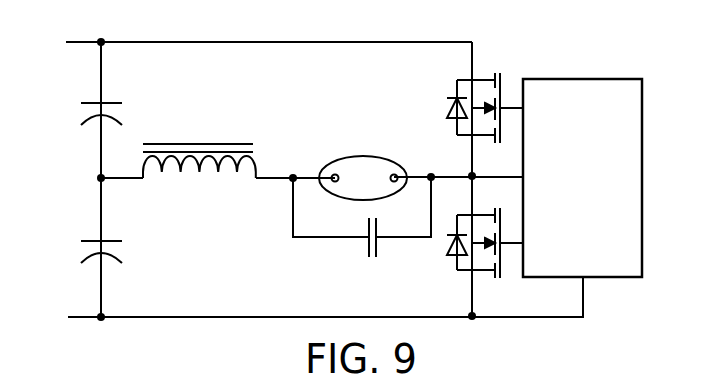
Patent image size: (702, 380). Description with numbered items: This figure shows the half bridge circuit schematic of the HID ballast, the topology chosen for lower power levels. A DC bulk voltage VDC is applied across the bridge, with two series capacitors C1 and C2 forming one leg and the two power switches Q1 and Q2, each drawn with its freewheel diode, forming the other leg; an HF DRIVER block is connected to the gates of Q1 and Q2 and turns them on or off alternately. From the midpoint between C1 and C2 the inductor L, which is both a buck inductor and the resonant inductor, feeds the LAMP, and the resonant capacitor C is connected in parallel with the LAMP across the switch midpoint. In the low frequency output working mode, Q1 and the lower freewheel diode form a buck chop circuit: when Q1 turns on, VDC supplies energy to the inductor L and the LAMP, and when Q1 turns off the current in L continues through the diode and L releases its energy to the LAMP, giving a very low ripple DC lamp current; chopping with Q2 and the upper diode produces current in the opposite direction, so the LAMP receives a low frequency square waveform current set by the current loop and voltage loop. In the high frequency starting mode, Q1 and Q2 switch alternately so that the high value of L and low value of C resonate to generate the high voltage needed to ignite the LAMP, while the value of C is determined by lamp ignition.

The DC bulk voltage source VDC is at (269, 30).
The half bridge capacitor C1 is at (82, 112).
The half bridge capacitor C2 is at (82, 251).
The inductor L is at (199, 178).
The lamp LAMP is at (363, 165).
The resonant capacitor C is at (362, 235).
The power switch Q1 is at (468, 108).
The power switch Q2 is at (468, 243).
The high frequency driver HF DRIVER is at (582, 178).